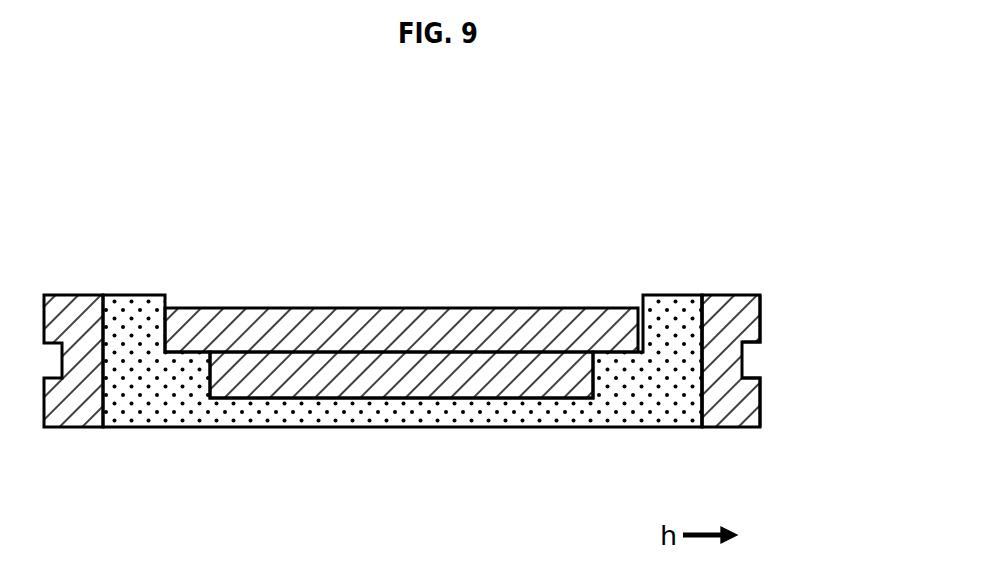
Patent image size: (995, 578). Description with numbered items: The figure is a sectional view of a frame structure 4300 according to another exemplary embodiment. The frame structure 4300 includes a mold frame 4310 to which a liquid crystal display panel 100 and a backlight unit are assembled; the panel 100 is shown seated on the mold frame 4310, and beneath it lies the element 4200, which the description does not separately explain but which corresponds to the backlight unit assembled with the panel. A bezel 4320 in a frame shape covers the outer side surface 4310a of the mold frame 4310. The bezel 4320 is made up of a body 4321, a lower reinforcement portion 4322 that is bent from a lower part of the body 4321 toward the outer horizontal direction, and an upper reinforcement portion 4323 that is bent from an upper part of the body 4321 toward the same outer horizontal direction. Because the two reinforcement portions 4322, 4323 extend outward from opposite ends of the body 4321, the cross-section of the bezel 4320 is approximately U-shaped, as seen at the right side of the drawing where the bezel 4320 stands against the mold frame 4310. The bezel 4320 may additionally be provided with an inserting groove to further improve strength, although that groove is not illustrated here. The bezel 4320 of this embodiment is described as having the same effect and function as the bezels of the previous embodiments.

The frame structure 4300 is at (599, 191).
The mold frame 4310 is at (670, 300).
The outer side surface 4310a is at (91, 330).
The liquid crystal display panel 100 is at (435, 325).
The embedded element 4200 is at (402, 383).
The bezel 4320 is at (737, 307).
The body 4321 is at (720, 367).
The lower reinforcement portion 4322 is at (760, 401).
The upper reinforcement portion 4323 is at (760, 323).